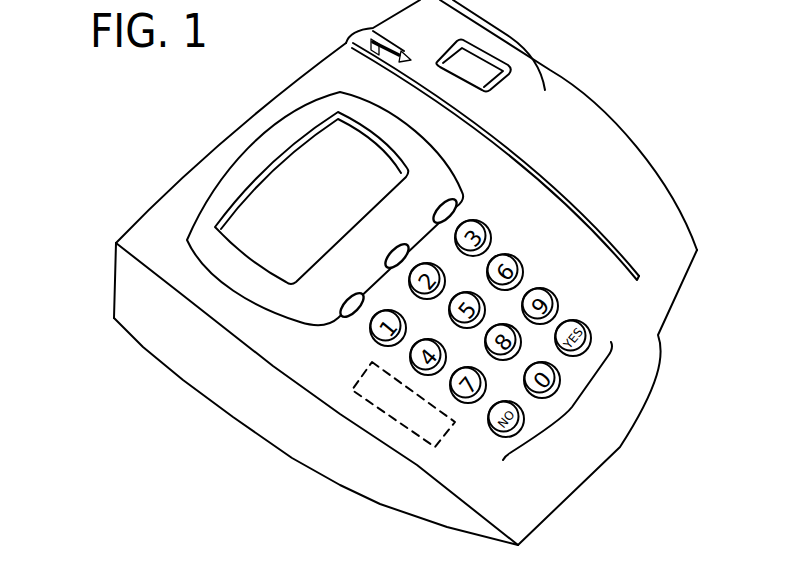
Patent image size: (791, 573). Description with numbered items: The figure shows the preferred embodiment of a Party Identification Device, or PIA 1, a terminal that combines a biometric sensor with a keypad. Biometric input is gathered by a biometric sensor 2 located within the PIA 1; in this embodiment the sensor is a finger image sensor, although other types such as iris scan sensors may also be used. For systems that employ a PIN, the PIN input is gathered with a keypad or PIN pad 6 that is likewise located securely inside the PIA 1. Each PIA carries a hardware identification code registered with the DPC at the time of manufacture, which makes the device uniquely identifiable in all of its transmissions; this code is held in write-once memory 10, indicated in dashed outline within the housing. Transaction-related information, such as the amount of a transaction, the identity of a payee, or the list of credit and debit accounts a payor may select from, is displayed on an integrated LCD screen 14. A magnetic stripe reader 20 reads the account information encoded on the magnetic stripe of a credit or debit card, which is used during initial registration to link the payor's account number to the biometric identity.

The Party Identification Device (PIA) 1 is at (243, 467).
The biometric sensor 2 is at (478, 72).
The keypad or PIN pad 6 is at (572, 409).
The write-once memory 10 is at (402, 403).
The integrated LCD screen 14 is at (293, 188).
The magnetic stripe reader 20 is at (345, 42).